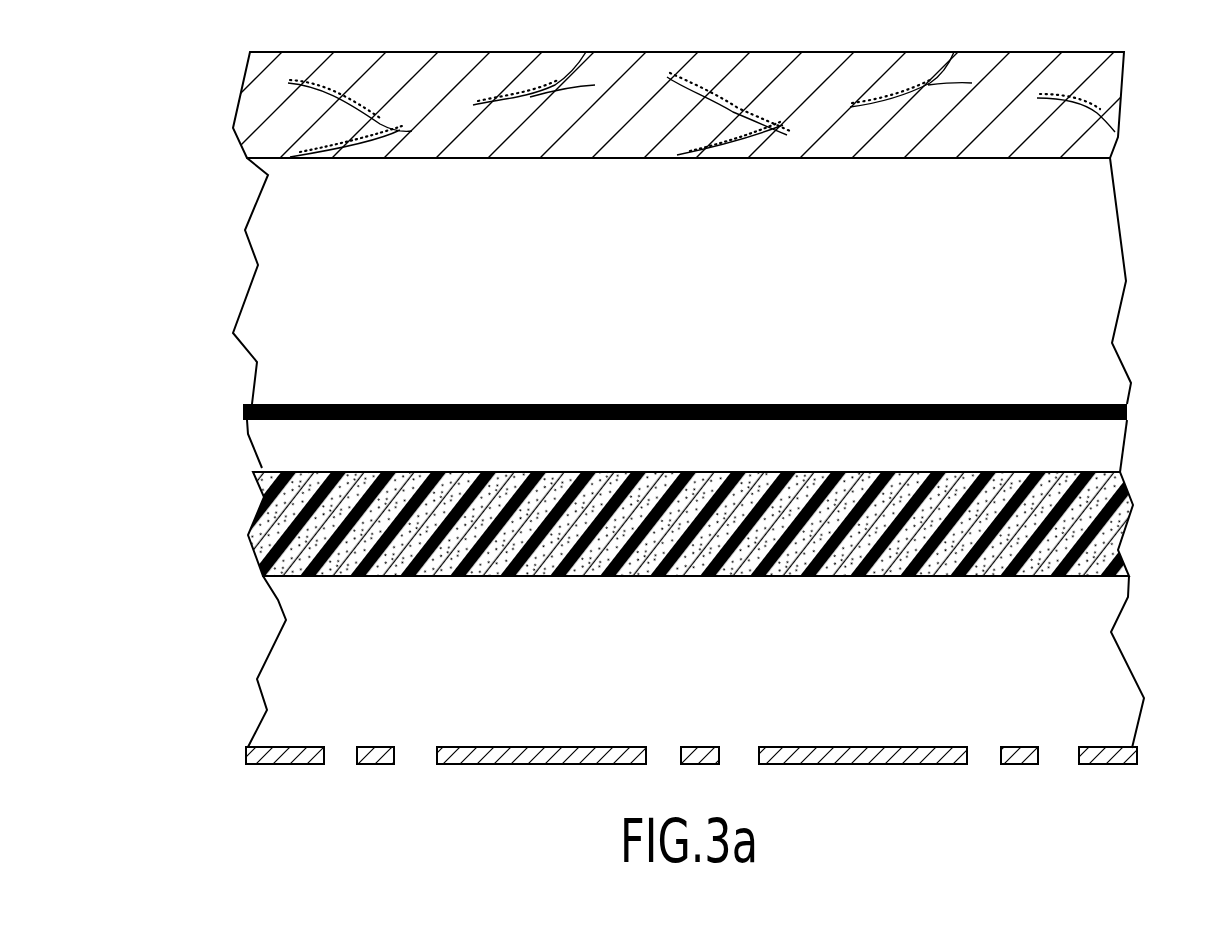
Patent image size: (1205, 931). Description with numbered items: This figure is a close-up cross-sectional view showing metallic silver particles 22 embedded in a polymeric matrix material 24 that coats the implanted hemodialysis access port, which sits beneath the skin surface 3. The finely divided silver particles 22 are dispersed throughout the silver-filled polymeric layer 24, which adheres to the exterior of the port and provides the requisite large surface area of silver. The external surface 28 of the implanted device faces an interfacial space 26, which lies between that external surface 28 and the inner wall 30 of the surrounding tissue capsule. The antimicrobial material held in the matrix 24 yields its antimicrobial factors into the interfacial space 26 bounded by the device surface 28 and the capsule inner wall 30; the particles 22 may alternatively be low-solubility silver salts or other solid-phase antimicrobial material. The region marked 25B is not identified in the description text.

The skin surface 3 is at (1003, 128).
The gap region 25B is at (355, 283).
The external surface 28 is at (373, 469).
The metallic silver particles 22 is at (682, 470).
The interfacial space 26 is at (1003, 459).
The polymeric matrix material 24 is at (985, 546).
The inner wall 30 is at (871, 764).